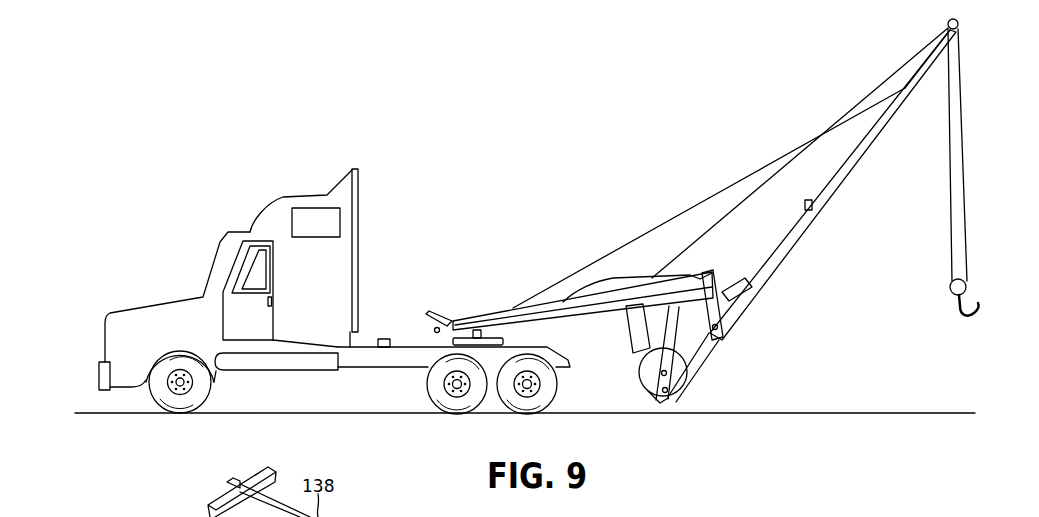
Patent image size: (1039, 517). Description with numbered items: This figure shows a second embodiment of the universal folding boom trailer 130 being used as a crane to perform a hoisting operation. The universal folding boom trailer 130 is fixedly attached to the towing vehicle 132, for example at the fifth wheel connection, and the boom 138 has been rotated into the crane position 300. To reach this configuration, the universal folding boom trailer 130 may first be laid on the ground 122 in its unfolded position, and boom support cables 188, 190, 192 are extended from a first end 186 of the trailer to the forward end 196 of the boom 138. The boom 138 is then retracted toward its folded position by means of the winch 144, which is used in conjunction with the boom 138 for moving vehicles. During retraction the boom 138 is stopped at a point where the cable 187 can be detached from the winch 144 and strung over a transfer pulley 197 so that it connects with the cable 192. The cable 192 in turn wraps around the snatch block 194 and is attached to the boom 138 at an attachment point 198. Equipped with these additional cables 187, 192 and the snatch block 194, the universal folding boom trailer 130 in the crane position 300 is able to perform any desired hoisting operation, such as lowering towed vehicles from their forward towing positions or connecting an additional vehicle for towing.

The ground 122 is at (431, 450).
The universal folding boom trailer 130 is at (582, 220).
The towing vehicle 132 is at (265, 205).
The boom 138 is at (824, 207).
The winch 144 is at (684, 230).
The first end 186 is at (510, 308).
The cable 187 is at (736, 207).
The boom support cable 188 is at (755, 172).
The boom support cable 190 is at (643, 181).
The cable 192 is at (968, 233).
The snatch block 194 is at (951, 283).
The forward end 196 is at (904, 88).
The transfer pulley 197 is at (948, 24).
The attachment point 198 is at (946, 53).
The crane position 300 is at (708, 448).